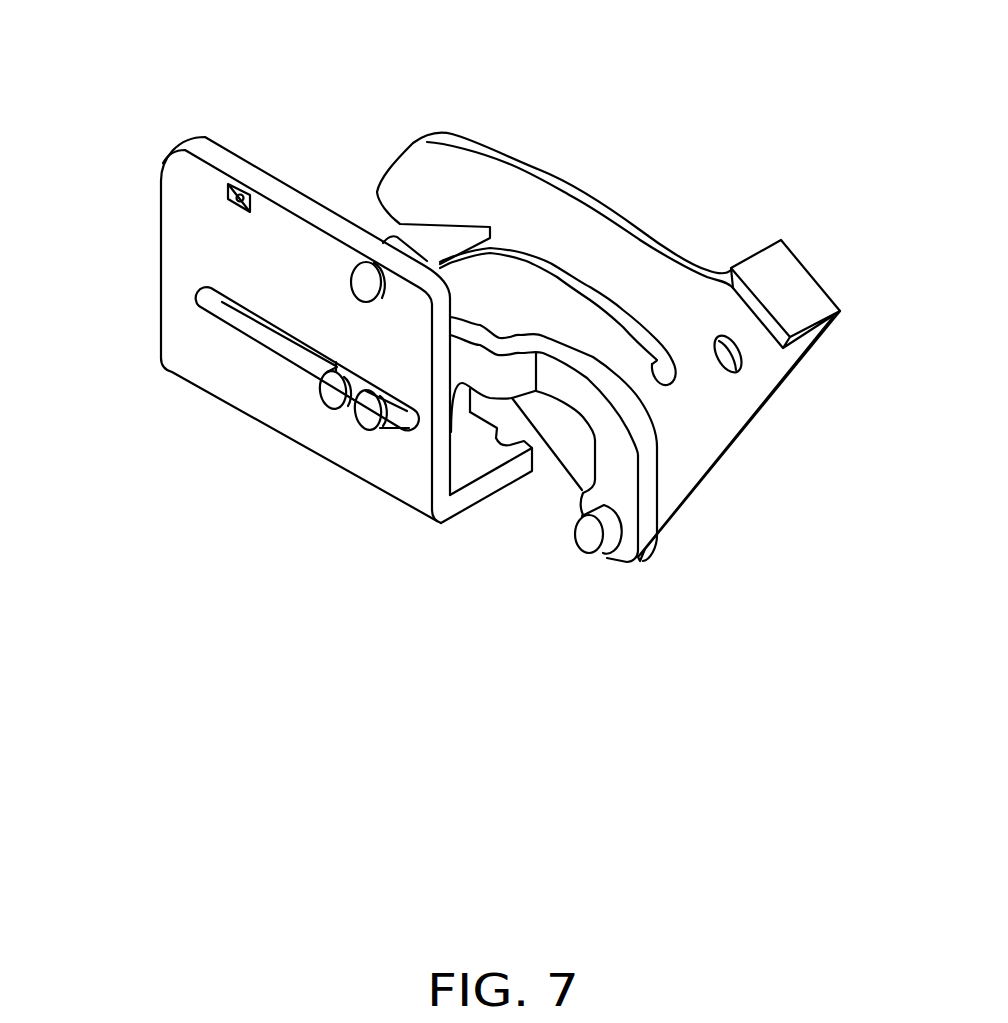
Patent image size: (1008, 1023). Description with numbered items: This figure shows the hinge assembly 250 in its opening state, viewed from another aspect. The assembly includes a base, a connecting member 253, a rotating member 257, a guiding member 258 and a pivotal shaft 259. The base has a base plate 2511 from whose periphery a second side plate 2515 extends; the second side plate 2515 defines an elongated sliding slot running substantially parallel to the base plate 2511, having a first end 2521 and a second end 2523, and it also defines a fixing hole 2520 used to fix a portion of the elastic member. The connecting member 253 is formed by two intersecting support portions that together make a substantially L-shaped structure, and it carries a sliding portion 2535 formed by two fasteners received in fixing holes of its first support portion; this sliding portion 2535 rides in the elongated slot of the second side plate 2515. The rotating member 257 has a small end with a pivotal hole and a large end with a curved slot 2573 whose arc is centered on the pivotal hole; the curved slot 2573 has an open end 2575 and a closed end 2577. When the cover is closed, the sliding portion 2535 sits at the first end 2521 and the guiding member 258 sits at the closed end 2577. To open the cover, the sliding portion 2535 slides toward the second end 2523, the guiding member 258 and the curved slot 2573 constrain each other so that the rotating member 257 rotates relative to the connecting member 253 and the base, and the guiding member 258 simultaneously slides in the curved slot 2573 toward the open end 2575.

The hinge assembly 250 is at (581, 78).
The second side plate 2515 is at (178, 283).
The fixing hole 2520 is at (228, 191).
The first end 2521 is at (210, 300).
The sliding portion 2535 is at (332, 402).
The second end 2523 is at (407, 420).
The base plate 2511 is at (465, 467).
The guiding member 258 is at (362, 282).
The open end 2575 is at (398, 225).
The curved slot 2573 is at (555, 277).
The closed end 2577 is at (657, 362).
The rotating member 257 is at (735, 398).
The connecting member 253 is at (638, 413).
The pivotal shaft 259 is at (593, 540).